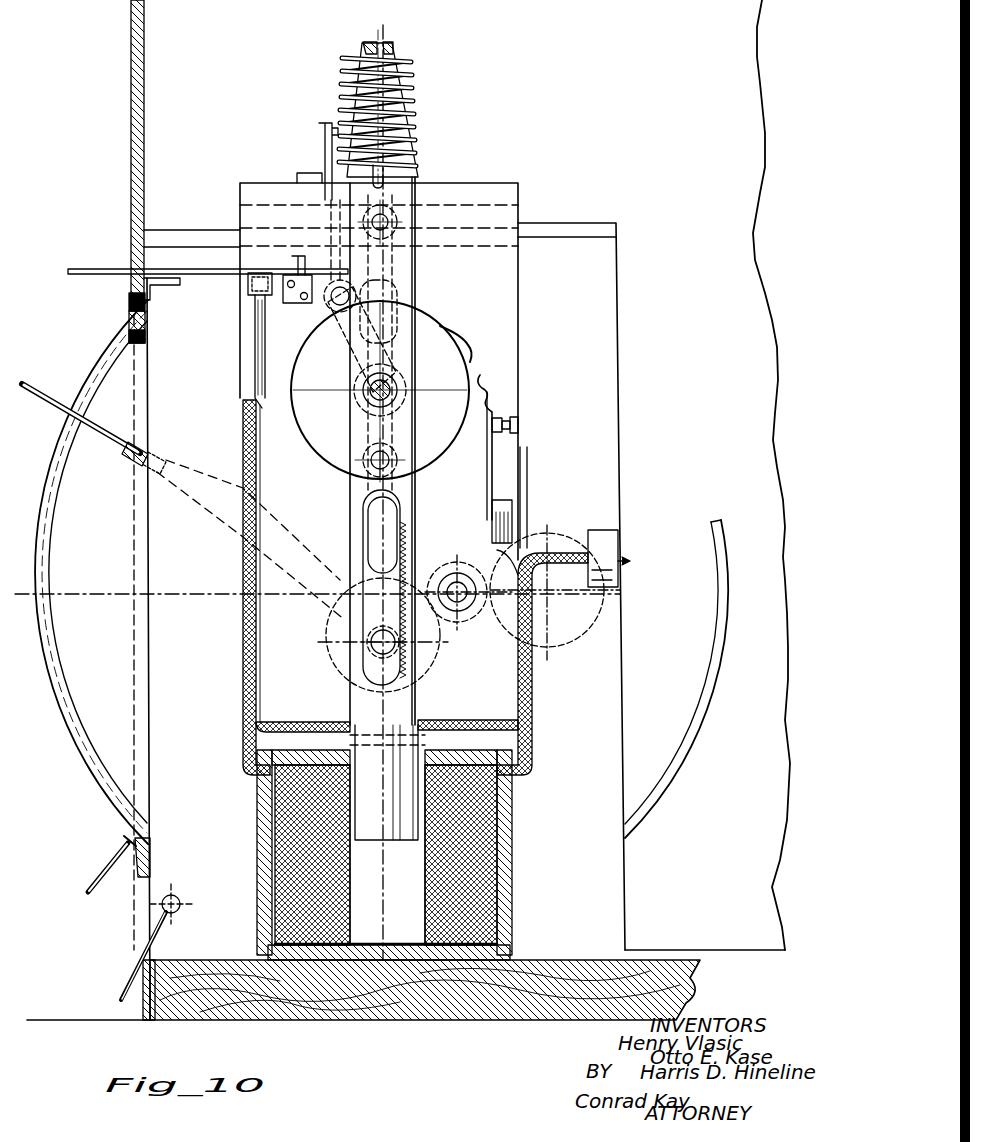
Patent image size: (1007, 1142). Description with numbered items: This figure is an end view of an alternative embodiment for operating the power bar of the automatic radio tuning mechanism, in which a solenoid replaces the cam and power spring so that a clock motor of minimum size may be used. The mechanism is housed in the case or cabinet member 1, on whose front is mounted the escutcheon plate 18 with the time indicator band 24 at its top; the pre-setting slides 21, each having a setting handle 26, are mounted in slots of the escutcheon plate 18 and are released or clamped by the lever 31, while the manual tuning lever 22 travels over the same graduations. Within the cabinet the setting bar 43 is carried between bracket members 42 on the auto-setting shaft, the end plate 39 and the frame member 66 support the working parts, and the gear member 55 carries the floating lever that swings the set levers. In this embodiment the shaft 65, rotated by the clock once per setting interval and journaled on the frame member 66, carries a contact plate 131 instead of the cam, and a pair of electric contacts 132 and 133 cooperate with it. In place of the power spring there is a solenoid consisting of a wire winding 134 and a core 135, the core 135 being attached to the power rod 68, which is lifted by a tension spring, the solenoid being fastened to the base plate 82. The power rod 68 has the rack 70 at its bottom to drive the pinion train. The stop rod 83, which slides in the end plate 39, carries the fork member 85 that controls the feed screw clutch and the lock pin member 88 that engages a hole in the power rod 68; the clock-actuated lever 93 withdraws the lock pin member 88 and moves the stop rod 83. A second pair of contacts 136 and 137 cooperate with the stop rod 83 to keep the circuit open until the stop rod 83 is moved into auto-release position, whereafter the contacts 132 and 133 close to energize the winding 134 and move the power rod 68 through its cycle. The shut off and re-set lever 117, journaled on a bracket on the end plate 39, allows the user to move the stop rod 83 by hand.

The case or cabinet member 1 is at (131, 178).
The shut off and re-set lever 117 is at (88, 269).
The escutcheon plate 18 is at (128, 302).
The time indicator band 24 is at (131, 325).
The manual tuning lever 22 is at (60, 414).
The setting bar 43 is at (132, 466).
The bracket members 42 is at (210, 508).
The pre-setting slides 21 is at (98, 797).
The setting handle 26 is at (88, 888).
The lever 31 is at (124, 987).
The clock-actuated lever 93 is at (330, 158).
The stop rod 83 is at (388, 228).
The contact 137 is at (250, 318).
The contact 136 is at (283, 348).
The lock pin member 88 is at (338, 310).
The fork member 85 is at (370, 348).
The contact plate 131 is at (462, 336).
The frame member 66 is at (515, 298).
The end plate 39 is at (618, 360).
The electric contact 132 is at (490, 400).
The electric contact 133 is at (518, 445).
The shaft 65 is at (392, 404).
The gear member 55 is at (576, 632).
The power rod 68 is at (358, 672).
The rack 70 is at (400, 652).
The core 135 is at (372, 828).
The wire winding 134 is at (484, 910).
The base plate 82 is at (545, 960).